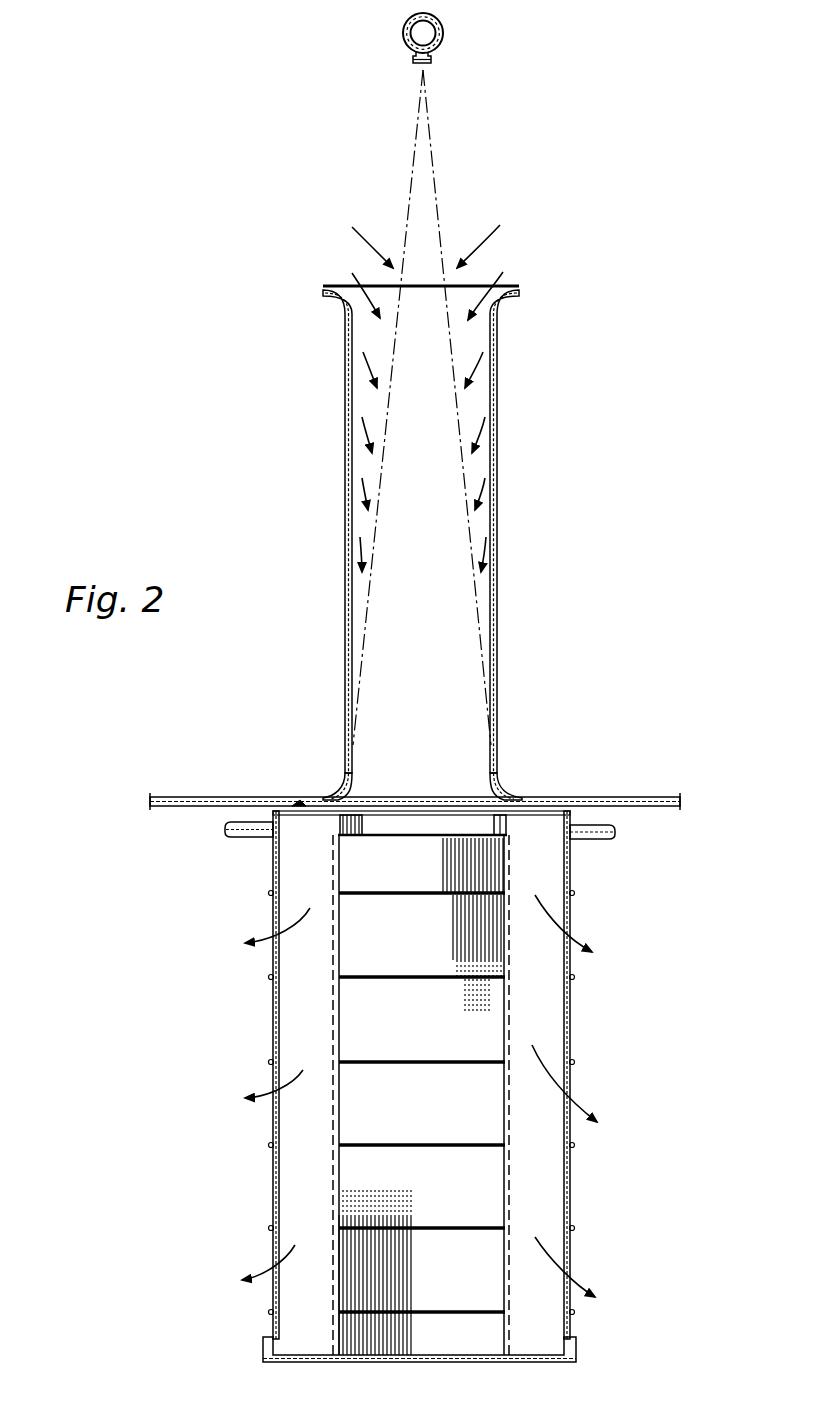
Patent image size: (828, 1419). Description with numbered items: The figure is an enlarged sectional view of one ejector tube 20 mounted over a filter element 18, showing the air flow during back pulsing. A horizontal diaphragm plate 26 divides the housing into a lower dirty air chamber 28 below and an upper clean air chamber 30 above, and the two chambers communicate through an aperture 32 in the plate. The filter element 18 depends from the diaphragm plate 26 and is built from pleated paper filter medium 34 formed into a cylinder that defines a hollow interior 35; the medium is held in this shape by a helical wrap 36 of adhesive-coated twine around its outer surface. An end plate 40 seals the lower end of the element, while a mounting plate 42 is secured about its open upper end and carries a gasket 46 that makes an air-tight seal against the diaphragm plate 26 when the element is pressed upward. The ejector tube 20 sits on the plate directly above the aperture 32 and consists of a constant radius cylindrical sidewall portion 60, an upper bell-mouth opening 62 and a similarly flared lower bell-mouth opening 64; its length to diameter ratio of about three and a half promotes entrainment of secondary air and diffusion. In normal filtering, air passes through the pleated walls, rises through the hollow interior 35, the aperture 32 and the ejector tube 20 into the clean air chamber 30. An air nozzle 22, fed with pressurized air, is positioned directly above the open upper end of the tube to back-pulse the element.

The filter element 18 is at (574, 1013).
The ejector tube 20 is at (497, 610).
The air nozzle 22 is at (404, 29).
The diaphragm plate 26 is at (608, 797).
The lower dirty air chamber 28 is at (226, 1076).
The upper clean air chamber 30 is at (199, 740).
The aperture 32 is at (481, 797).
The pleated paper filter medium 34 is at (538, 1203).
The hollow interior 35 is at (412, 1097).
The helical wrap 36 is at (378, 975).
The end plate 40 is at (573, 1361).
The mounting plate 42 is at (598, 839).
The gasket 46 is at (298, 804).
The constant radius cylindrical sidewall portion 60 is at (498, 484).
The upper bell-mouth opening 62 is at (483, 292).
The lower bell-mouth opening 64 is at (335, 795).